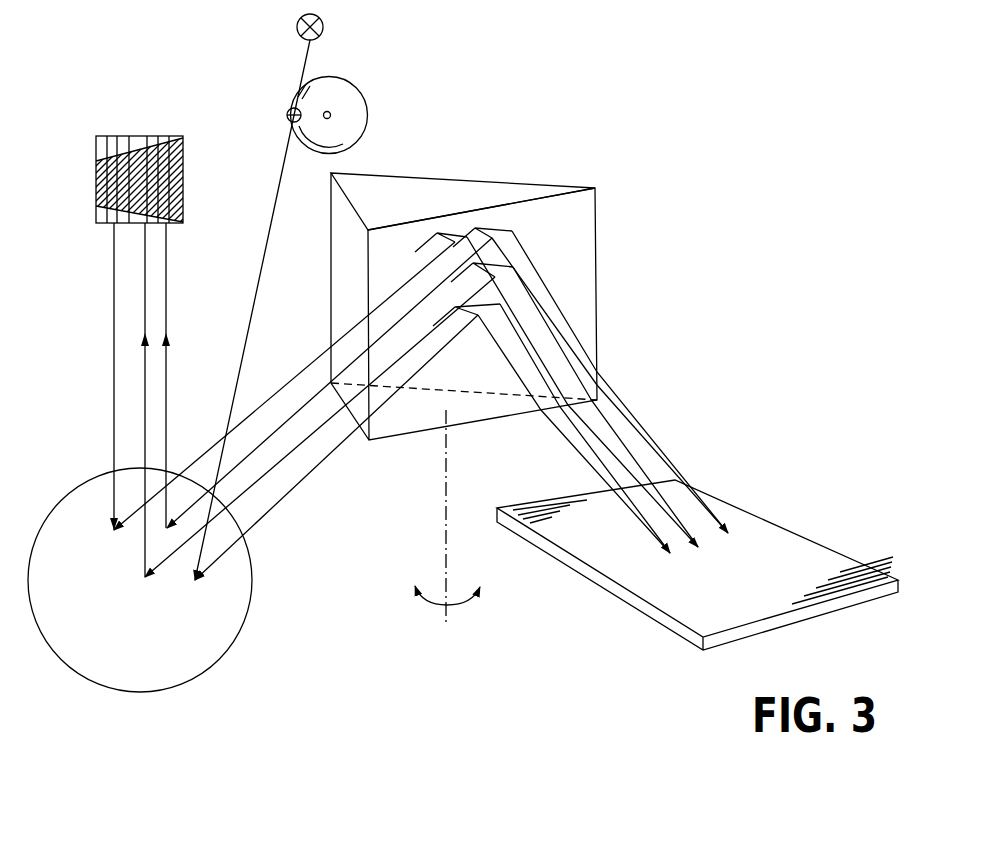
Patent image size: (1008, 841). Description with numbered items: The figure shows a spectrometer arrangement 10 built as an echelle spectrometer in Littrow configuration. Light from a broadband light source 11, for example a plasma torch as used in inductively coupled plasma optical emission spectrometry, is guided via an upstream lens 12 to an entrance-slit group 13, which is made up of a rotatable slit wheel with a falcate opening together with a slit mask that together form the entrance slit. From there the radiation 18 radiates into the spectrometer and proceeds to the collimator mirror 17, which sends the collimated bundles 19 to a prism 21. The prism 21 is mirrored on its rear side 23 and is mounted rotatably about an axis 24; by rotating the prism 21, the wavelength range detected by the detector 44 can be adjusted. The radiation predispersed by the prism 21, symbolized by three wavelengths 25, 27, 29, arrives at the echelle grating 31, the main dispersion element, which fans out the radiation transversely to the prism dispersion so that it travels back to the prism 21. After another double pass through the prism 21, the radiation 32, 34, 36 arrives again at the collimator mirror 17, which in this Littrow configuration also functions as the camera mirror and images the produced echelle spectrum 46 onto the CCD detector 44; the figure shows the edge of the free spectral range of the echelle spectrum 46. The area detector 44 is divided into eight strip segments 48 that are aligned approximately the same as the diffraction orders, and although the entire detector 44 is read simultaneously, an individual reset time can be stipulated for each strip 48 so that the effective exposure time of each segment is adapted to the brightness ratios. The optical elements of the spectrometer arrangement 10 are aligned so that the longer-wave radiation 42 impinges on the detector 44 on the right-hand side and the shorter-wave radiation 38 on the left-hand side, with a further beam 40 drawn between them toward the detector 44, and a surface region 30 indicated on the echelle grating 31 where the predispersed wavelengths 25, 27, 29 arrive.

The spectrometer arrangement 10 is at (655, 126).
The broadband light source 11 is at (323, 24).
The upstream lens 12 is at (309, 62).
The entrance-slit group 13 is at (372, 98).
The collimator mirror 17 is at (218, 637).
The radiation 18 is at (249, 345).
The collimated bundles 19 is at (338, 449).
The prism 21 is at (583, 272).
The rear side 23 is at (525, 184).
The axis 24 is at (479, 594).
The wavelength 25 is at (653, 455).
The wavelength 27 is at (600, 428).
The wavelength 29 is at (590, 447).
The detector surface 30 is at (862, 573).
The echelle grating 31 is at (650, 612).
The radiation 32 is at (262, 478).
The radiation 34 is at (282, 427).
The radiation 36 is at (293, 378).
The shorter-wave radiation 38 is at (114, 364).
The optical fiber 40 is at (145, 441).
The longer-wave radiation 42 is at (166, 288).
The detector 44 is at (98, 222).
The echelle spectrum 46 is at (150, 145).
The strip segments 48 is at (98, 140).